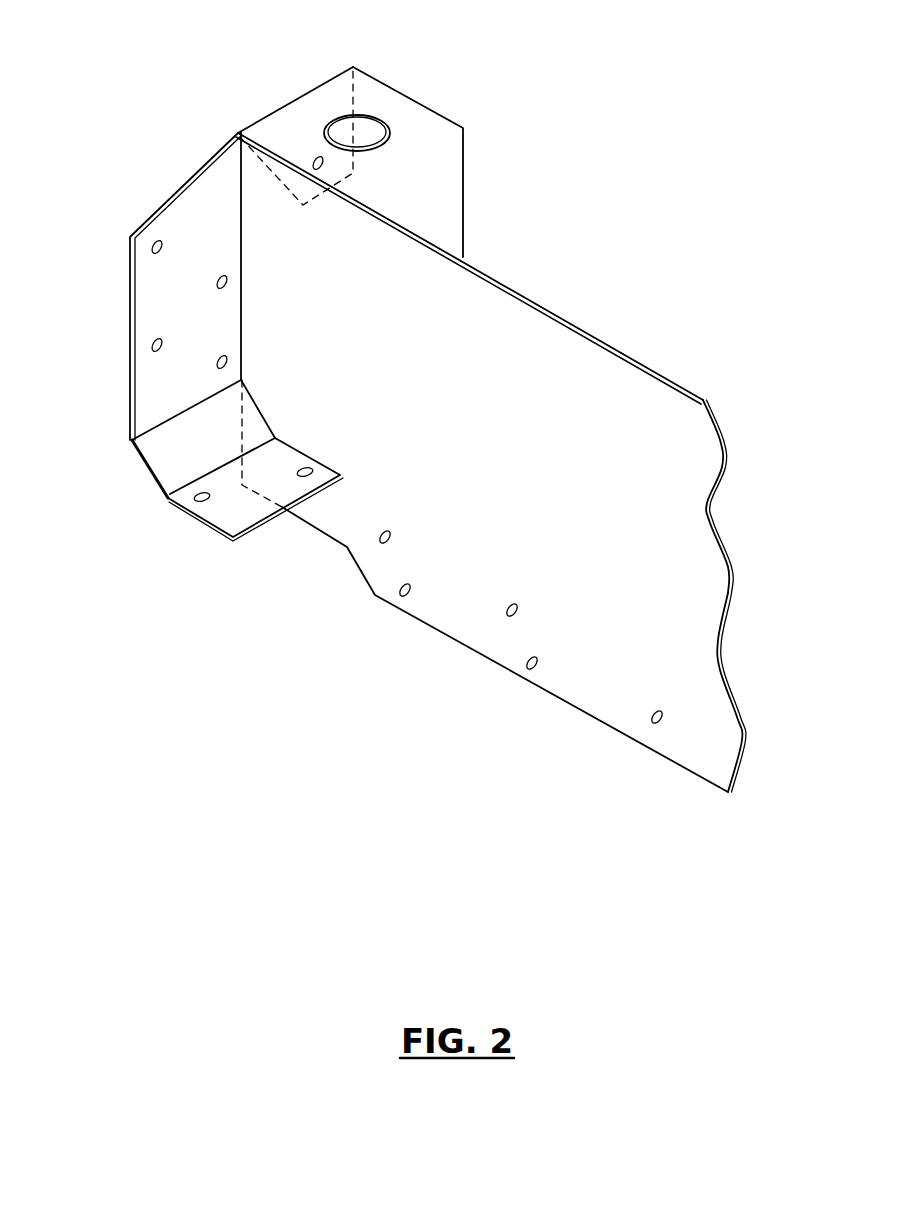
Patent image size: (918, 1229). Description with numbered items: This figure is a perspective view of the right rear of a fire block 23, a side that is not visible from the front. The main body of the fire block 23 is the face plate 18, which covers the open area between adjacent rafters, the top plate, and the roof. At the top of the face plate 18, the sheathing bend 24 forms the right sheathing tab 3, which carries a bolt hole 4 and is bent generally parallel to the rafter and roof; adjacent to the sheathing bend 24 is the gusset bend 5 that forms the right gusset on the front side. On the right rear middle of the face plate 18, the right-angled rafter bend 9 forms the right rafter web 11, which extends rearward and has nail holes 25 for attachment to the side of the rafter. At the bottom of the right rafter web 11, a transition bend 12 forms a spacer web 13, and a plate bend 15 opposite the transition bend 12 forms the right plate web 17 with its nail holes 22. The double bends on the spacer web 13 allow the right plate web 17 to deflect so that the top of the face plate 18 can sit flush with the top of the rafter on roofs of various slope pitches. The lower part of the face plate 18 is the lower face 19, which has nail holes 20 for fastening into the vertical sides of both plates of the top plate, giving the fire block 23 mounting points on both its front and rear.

The top mounting plate 3 is at (277, 127).
The bolt hole 4 is at (370, 127).
The gusset bend 5 is at (340, 83).
The rafter bend 9 is at (240, 133).
The sheathing bend 24 is at (290, 157).
The right rafter web 11 is at (193, 203).
The nail holes 25 is at (153, 343).
The transition bend 12 is at (147, 438).
The spacer web 13 is at (160, 457).
The plate bend 15 is at (182, 493).
The right plate web 17 is at (197, 510).
The nail holes 22 is at (210, 500).
The fire block 23 is at (510, 340).
The face plate 18 is at (687, 490).
The lower face 19 is at (702, 742).
The nail holes 20 is at (532, 670).